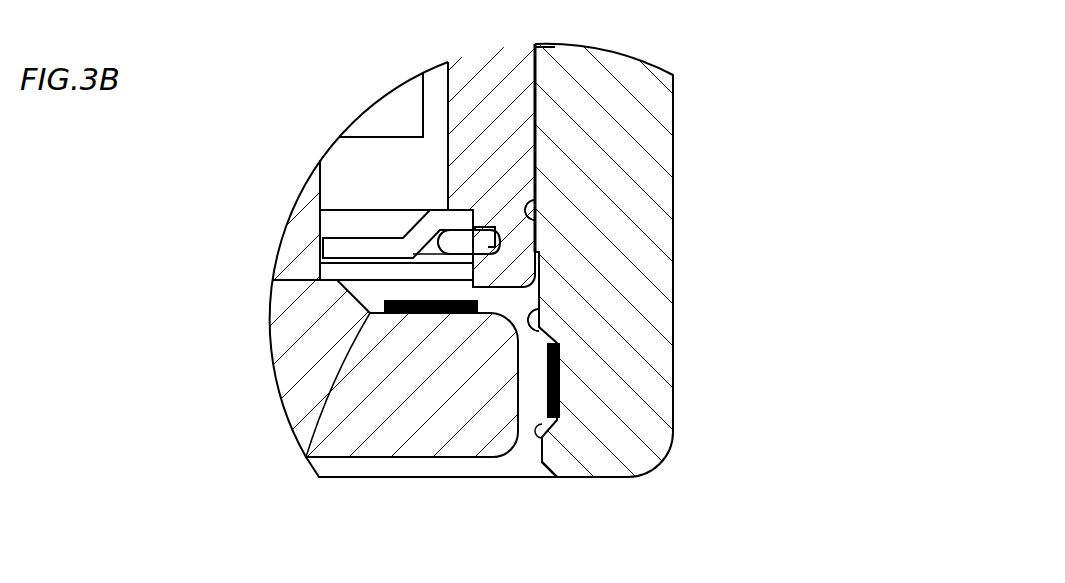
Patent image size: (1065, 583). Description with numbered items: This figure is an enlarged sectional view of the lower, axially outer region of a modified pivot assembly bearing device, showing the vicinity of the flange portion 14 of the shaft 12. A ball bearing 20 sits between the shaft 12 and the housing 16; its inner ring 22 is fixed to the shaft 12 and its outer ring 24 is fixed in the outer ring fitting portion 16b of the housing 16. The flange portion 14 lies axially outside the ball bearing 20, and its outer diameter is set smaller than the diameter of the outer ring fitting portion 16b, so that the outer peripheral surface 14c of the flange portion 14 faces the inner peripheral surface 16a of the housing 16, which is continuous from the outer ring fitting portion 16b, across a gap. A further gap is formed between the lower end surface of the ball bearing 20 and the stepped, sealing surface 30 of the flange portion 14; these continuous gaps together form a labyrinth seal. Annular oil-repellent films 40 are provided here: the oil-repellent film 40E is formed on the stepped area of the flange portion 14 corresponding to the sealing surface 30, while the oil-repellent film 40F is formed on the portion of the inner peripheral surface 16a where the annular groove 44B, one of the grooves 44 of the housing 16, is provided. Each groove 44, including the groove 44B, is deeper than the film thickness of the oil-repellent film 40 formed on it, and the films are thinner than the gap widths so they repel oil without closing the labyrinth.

The shaft 12 is at (283, 385).
The flange portion 14 is at (413, 422).
The outer peripheral surface of the flange portion 14c is at (520, 398).
The housing 16 is at (648, 175).
The inner peripheral surface of the housing 16a is at (540, 327).
The outer ring fitting portion 16b is at (536, 224).
The ball bearing 20 is at (537, 105).
The inner ring 22 is at (293, 236).
The outer ring 24 is at (457, 65).
The sealing surface 30 is at (371, 313).
The oil-repellent film 40 is at (472, 359).
The oil-repellent film 40E is at (479, 302).
The oil-repellent film 40F is at (548, 385).
The groove 44 is at (549, 457).
The annular groove 44B is at (545, 460).